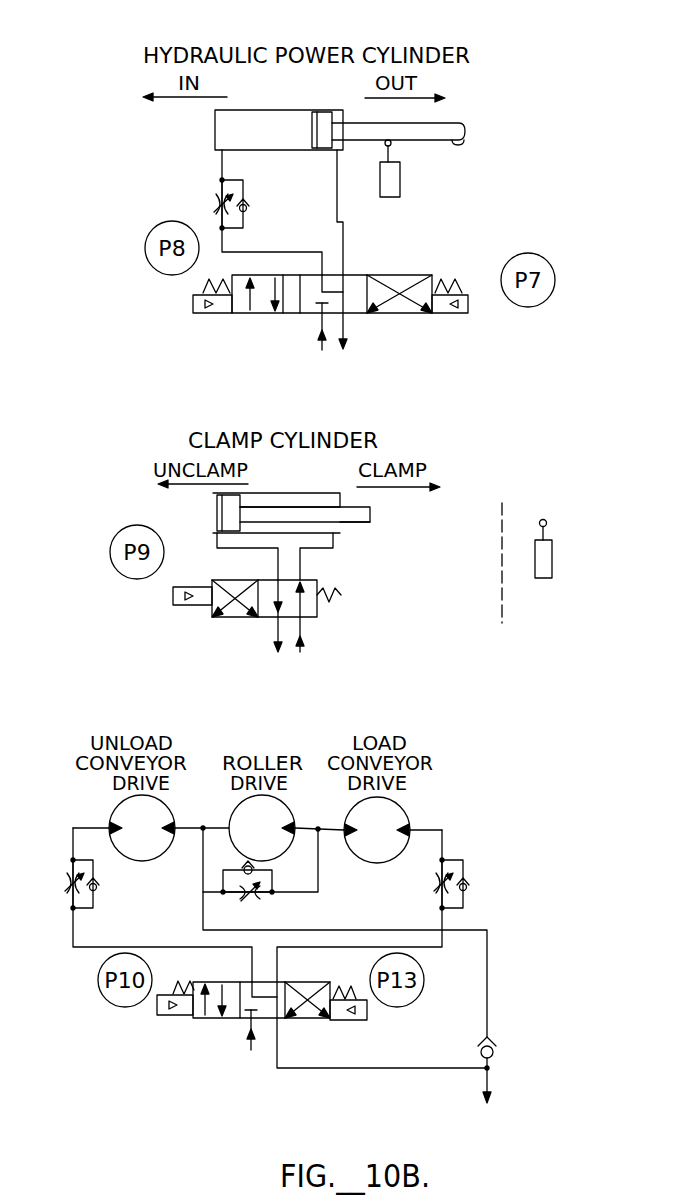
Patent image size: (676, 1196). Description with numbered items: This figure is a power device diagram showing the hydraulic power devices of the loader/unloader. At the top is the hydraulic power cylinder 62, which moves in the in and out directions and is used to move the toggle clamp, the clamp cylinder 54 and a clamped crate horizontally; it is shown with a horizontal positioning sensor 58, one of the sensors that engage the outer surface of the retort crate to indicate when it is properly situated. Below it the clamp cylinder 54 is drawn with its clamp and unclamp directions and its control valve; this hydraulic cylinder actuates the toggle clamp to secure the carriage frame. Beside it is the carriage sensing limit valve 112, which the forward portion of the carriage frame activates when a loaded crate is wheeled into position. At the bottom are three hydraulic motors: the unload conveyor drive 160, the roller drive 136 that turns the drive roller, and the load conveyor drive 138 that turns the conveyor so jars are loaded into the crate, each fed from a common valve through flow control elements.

The hydraulic power cylinder 62 is at (486, 50).
The horizontal positioning sensor 58 is at (400, 189).
The clamp cylinder 54 is at (388, 432).
The carriage sensing limit valve 112 is at (552, 565).
The unload conveyor drive 160 is at (104, 806).
The roller drive 136 is at (286, 807).
The load conveyor drive 138 is at (406, 810).